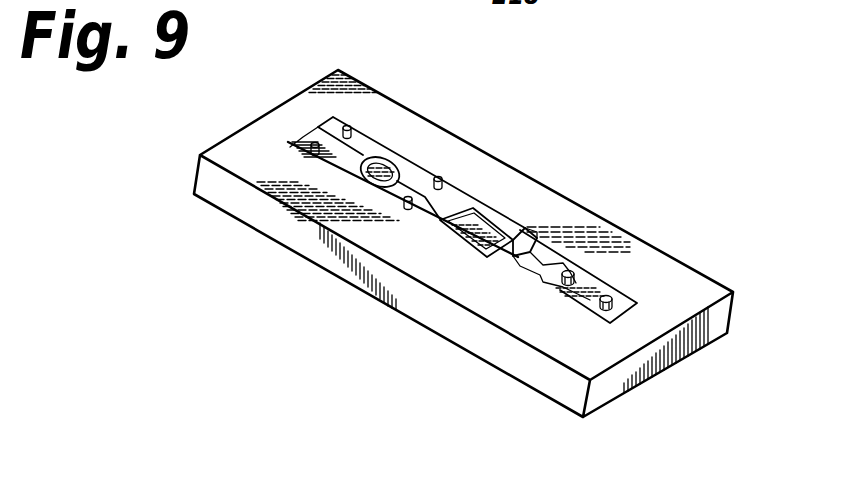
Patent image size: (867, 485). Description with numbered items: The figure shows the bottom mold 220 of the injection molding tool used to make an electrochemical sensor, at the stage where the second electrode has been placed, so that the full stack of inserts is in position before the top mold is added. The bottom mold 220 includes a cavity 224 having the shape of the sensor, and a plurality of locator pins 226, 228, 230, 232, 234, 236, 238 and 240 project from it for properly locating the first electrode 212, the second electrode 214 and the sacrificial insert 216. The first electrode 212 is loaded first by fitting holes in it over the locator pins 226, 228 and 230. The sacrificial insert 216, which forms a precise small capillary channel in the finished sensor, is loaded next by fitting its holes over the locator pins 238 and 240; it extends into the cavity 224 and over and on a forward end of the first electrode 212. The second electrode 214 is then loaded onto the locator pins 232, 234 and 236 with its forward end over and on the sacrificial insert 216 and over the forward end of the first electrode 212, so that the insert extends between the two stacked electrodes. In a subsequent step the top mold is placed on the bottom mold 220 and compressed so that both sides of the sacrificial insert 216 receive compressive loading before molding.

The first electrode 212 is at (350, 178).
The second electrode 214 is at (372, 140).
The sacrificial insert 216 is at (531, 250).
The bottom mold 220 is at (686, 272).
The cavity 224 is at (323, 127).
The locator pin 226 is at (358, 158).
The locator pin 228 is at (407, 205).
The locator pin 230 is at (489, 256).
The locator pin 232 is at (524, 222).
The locator pin 234 is at (442, 182).
The locator pin 236 is at (350, 130).
The locator pin 238 is at (571, 274).
The locator pin 240 is at (609, 297).